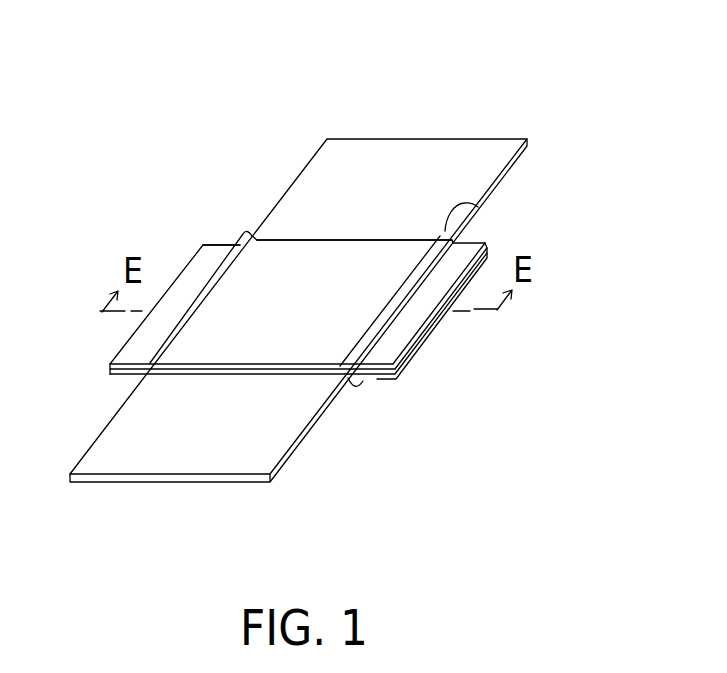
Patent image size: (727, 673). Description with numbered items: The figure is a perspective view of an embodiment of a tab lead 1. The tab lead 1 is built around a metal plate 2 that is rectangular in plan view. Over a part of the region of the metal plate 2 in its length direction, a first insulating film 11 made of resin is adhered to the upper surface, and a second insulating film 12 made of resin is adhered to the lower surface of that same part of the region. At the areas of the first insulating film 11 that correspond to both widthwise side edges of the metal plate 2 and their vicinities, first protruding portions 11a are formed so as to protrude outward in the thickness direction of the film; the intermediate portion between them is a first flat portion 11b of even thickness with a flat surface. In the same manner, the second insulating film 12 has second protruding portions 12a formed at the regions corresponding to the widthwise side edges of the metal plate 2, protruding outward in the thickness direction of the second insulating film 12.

The tab lead 1 is at (528, 97).
The metal plate 2 is at (422, 158).
The first insulating film 11 is at (398, 344).
The first protruding portion 11a is at (243, 234).
The first flat portion 11b is at (330, 270).
The second insulating film 12 is at (381, 383).
The second protruding portion 12a is at (351, 386).